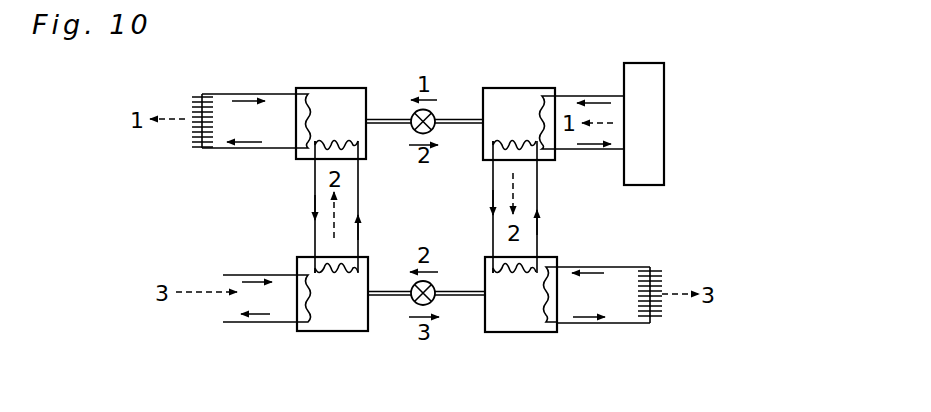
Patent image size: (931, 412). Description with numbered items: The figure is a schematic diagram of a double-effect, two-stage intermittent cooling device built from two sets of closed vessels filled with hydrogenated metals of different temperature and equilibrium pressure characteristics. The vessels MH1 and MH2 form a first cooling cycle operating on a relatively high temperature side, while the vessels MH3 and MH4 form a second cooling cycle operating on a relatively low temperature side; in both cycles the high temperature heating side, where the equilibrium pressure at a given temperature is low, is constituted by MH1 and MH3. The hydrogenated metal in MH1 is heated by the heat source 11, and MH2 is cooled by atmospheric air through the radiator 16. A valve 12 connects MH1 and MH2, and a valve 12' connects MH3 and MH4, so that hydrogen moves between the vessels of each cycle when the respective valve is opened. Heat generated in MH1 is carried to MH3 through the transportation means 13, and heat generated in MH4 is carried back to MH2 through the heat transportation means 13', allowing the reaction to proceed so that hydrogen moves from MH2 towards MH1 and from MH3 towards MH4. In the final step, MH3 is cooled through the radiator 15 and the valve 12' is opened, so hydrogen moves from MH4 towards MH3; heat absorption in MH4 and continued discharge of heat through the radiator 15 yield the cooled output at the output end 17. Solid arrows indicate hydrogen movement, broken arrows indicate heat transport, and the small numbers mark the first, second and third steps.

The heat source 11 is at (647, 77).
The valve 12 is at (424, 138).
The valve 12' is at (426, 318).
The transportation means 13 is at (542, 207).
The heat transportation means 13' is at (374, 207).
The radiator 15 is at (651, 268).
The radiator 16 is at (200, 95).
The output end 17 is at (245, 301).
The hydrogenated metal vessel MH1 is at (520, 95).
The hydrogenated metal vessel MH2 is at (337, 90).
The hydrogenated metal vessel MH3 is at (517, 323).
The hydrogenated metal vessel MH4 is at (336, 322).